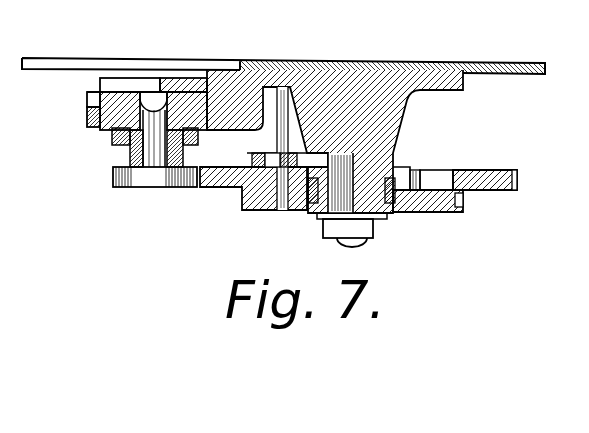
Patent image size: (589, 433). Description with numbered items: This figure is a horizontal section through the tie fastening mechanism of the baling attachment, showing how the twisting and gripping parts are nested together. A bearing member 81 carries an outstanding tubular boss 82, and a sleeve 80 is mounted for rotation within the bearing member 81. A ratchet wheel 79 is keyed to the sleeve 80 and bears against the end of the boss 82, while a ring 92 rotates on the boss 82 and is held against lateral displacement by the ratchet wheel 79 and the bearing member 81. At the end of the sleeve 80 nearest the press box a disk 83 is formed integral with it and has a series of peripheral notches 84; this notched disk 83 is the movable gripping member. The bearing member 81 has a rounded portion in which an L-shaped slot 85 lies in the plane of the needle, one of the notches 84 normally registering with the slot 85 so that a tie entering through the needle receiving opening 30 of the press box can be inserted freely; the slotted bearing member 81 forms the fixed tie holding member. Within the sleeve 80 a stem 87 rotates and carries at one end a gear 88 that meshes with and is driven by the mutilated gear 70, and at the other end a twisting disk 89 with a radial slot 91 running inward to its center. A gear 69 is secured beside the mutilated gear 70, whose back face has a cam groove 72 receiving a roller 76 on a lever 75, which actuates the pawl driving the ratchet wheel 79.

The needle receiving opening 30 is at (87, 58).
The gear 69 is at (450, 210).
The mutilated gear 70 is at (503, 169).
The cam groove 72 is at (430, 173).
The lever 75 is at (257, 163).
The roller 76 is at (279, 178).
The ratchet wheel 79 is at (202, 187).
The sleeve 80 is at (173, 160).
The bearing member 81 is at (205, 117).
The tubular boss 82 is at (117, 137).
The disk 83 is at (102, 92).
The peripheral notches 84 is at (92, 96).
The L-shaped slot 85 is at (93, 117).
The stem 87 is at (130, 175).
The gear 88 is at (135, 178).
The twisting disk 89 is at (193, 82).
The radial slot 91 is at (127, 83).
The ring 92 is at (145, 150).